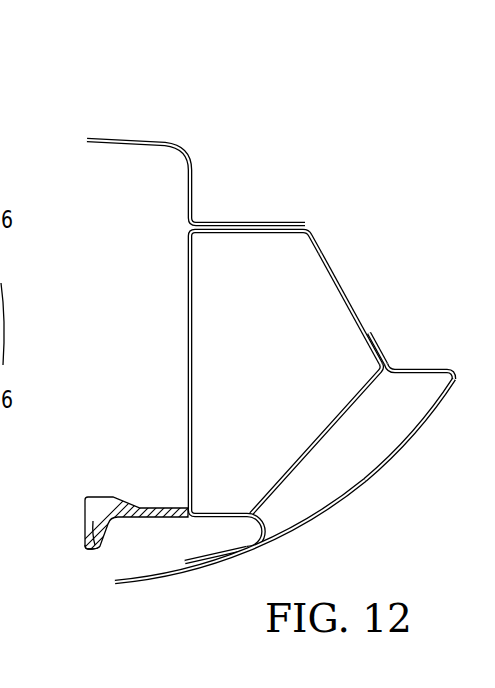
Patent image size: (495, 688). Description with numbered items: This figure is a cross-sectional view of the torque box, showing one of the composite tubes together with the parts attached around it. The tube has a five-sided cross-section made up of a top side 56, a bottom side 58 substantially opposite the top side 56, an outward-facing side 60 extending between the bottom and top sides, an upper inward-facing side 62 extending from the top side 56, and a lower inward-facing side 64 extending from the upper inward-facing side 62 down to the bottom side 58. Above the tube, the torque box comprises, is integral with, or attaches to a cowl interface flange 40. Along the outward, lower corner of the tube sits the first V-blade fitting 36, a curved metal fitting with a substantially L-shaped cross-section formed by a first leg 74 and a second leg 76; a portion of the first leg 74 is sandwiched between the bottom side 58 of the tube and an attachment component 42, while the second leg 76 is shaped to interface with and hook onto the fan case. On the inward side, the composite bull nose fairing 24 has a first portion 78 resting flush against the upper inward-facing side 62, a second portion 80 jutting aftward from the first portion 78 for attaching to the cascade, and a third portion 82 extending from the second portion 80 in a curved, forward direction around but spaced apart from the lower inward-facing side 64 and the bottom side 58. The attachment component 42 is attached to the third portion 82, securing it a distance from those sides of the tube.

The bull nose fairing 24 is at (399, 453).
The first V-blade fitting 36 is at (95, 496).
The cowl interface flange 40 is at (146, 142).
The attachment component 42 is at (270, 535).
The top side 56 is at (247, 234).
The bottom side 58 is at (213, 511).
The outward-facing side 60 is at (188, 352).
The upper inward-facing side 62 is at (342, 282).
The lower inward-facing side 64 is at (314, 436).
The first leg 74 is at (155, 506).
The second leg 76 is at (84, 537).
The first portion 78 is at (375, 342).
The second portion 80 is at (433, 370).
The third portion 82 is at (341, 506).